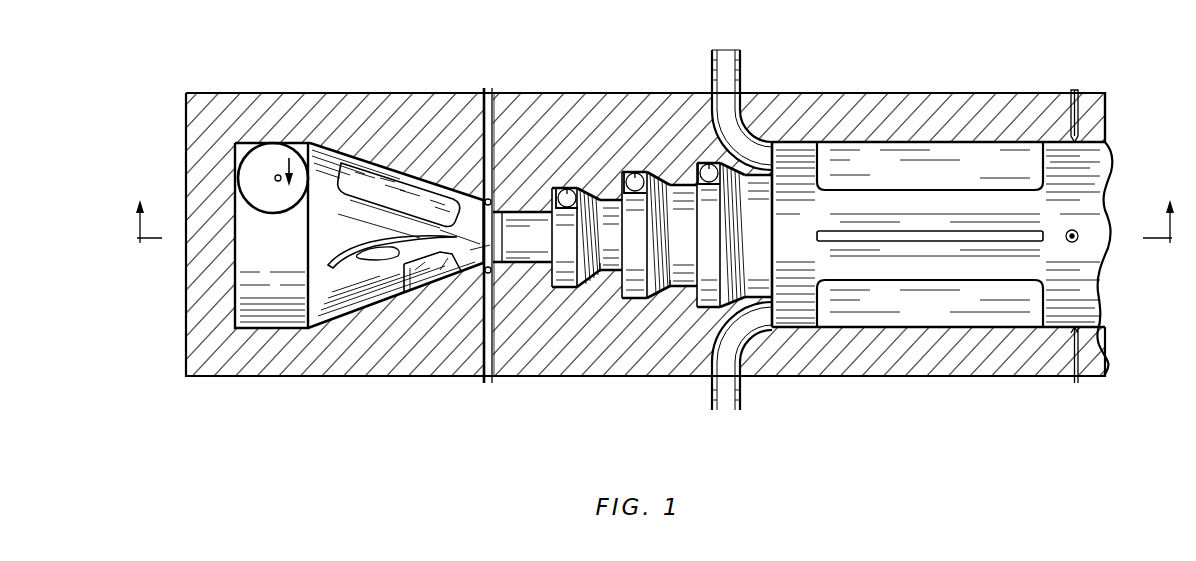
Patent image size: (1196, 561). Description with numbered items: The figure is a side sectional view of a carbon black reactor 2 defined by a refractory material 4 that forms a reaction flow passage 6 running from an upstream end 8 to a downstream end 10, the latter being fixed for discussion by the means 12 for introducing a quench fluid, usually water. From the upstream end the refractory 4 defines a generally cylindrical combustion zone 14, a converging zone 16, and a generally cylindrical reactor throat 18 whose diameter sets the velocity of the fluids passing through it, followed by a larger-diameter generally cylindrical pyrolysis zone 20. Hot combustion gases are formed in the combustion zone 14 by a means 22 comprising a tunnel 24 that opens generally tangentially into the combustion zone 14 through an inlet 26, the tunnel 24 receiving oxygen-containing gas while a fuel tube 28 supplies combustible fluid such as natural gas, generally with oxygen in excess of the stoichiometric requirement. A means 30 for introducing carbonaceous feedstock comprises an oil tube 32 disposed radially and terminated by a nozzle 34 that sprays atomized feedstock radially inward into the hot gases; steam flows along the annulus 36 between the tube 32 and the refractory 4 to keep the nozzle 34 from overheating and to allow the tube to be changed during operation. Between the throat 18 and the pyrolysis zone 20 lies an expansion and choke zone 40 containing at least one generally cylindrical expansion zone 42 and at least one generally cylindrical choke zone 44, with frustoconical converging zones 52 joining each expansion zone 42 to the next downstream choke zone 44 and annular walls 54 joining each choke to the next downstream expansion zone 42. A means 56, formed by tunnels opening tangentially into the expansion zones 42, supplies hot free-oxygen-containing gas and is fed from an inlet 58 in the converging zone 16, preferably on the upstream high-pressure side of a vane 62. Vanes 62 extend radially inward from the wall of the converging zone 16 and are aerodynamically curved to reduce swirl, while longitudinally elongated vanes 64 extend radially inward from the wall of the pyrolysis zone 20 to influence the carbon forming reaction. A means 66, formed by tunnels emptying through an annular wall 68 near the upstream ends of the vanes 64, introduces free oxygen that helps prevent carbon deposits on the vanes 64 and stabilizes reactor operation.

The carbon black reactor 2 is at (866, 48).
The refractory material 4 is at (625, 120).
The reaction flow passage 6 is at (1118, 179).
The upstream end 8 is at (204, 93).
The downstream end 10 is at (1106, 94).
The means for introduction of a quench fluid 12 is at (1078, 86).
The combustion zone 14 is at (283, 250).
The converging zone 16 is at (356, 233).
The reactor throat 18 is at (542, 249).
The pyrolysis zone 20 is at (782, 246).
The means for forming hot combustion gases 22 is at (289, 172).
The tunnel 24 is at (261, 207).
The inlet 26 is at (308, 197).
The fuel tube 28 is at (275, 180).
The means for introducing a carbonaceous feedstock 30 is at (480, 91).
The oil tube 32 is at (509, 94).
The nozzle 34 is at (443, 261).
The annulus 36 is at (493, 93).
The expansion and choke zone 40 is at (544, 309).
The expansion zone 42 is at (509, 286).
The choke zone 44 is at (593, 193).
The frustoconical converging zones 52 is at (574, 185).
The annular walls 54 is at (606, 301).
The means for introducing hot gases containing free oxygen 56 is at (562, 189).
The inlet 58 is at (399, 252).
The vane 62 is at (334, 262).
The vane 64 is at (979, 191).
The means for introducing free oxygen containing gas 66 is at (739, 62).
The annular wall 68 is at (780, 299).